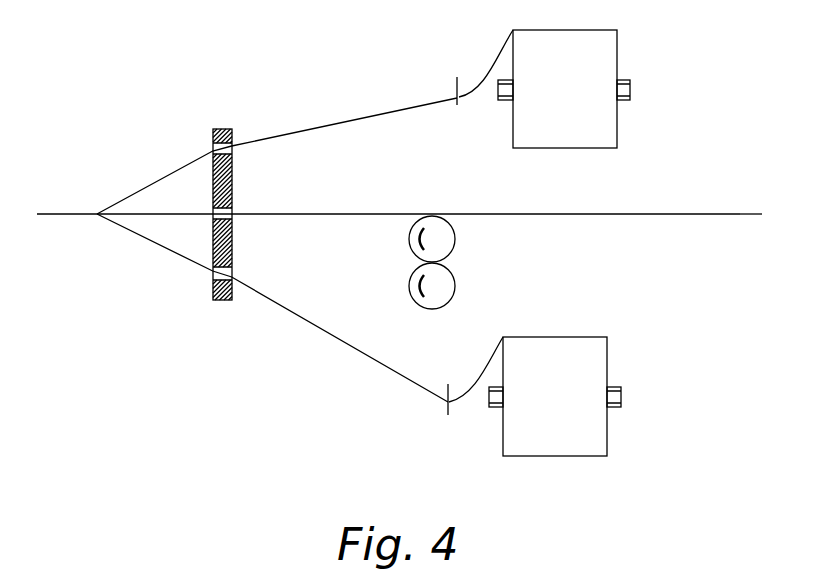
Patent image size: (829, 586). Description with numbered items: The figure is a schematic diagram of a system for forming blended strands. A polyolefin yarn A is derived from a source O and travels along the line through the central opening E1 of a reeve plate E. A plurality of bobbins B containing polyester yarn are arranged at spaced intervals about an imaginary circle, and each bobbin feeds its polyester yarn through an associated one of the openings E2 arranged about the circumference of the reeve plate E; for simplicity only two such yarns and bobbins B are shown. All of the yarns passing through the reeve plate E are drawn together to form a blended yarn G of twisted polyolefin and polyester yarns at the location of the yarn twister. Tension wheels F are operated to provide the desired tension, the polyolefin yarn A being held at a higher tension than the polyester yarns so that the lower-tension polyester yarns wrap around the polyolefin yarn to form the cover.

The polyolefin yarn A is at (285, 214).
The source O is at (769, 216).
The blended yarn G is at (50, 214).
The bobbins B is at (178, 168).
The reeve plate E is at (233, 207).
The central opening E1 is at (228, 223).
The openings E2 is at (232, 133).
The tension wheels F is at (455, 242).